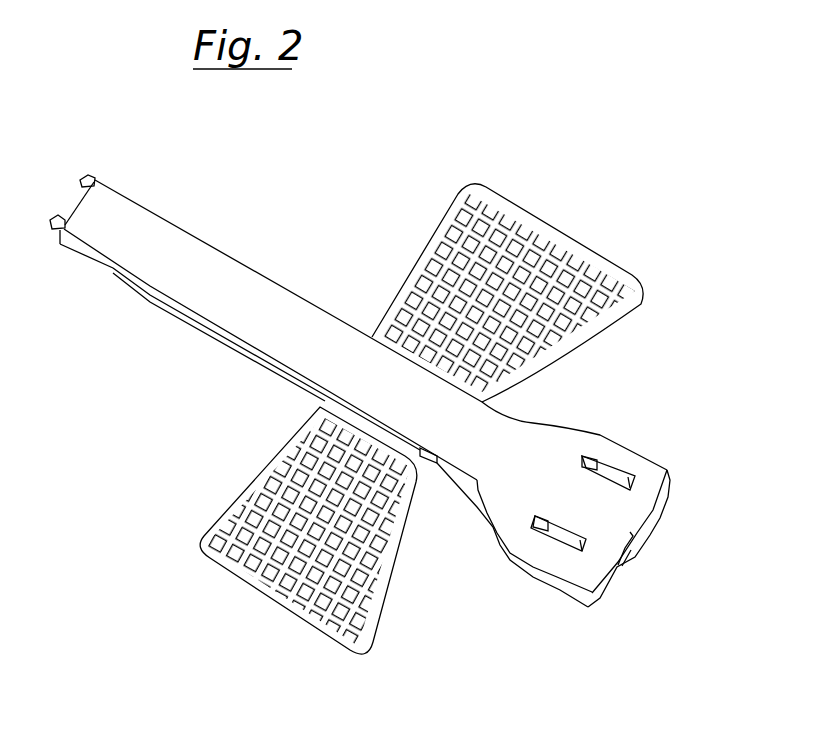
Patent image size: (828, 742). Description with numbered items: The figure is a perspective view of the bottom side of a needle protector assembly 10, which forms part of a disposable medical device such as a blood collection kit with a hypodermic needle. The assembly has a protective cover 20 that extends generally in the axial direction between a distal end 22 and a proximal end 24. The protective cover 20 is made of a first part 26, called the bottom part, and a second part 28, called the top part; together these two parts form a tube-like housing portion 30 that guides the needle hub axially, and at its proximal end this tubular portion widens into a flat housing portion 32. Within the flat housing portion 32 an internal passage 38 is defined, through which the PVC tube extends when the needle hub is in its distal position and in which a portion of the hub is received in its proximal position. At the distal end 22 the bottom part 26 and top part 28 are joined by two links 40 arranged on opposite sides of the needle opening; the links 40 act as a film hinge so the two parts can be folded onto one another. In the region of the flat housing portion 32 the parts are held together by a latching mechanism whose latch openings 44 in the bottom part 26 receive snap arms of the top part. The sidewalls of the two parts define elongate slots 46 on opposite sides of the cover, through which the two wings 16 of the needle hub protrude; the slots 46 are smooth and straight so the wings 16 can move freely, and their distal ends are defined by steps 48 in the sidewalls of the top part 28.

The needle protector assembly 10 is at (359, 185).
The wings 16 is at (512, 197).
The protective cover 20 is at (328, 310).
The distal end 22 is at (77, 197).
The proximal end 24 is at (659, 515).
The first part 26 is at (210, 252).
The second part 28 is at (189, 323).
The tube-like housing portion 30 is at (270, 279).
The flat housing portion 32 is at (573, 593).
The internal passage 38 is at (630, 542).
The links 40 is at (84, 178).
The latch openings 44 is at (600, 463).
The elongate slots 46 is at (146, 294).
The steps 48 is at (113, 270).